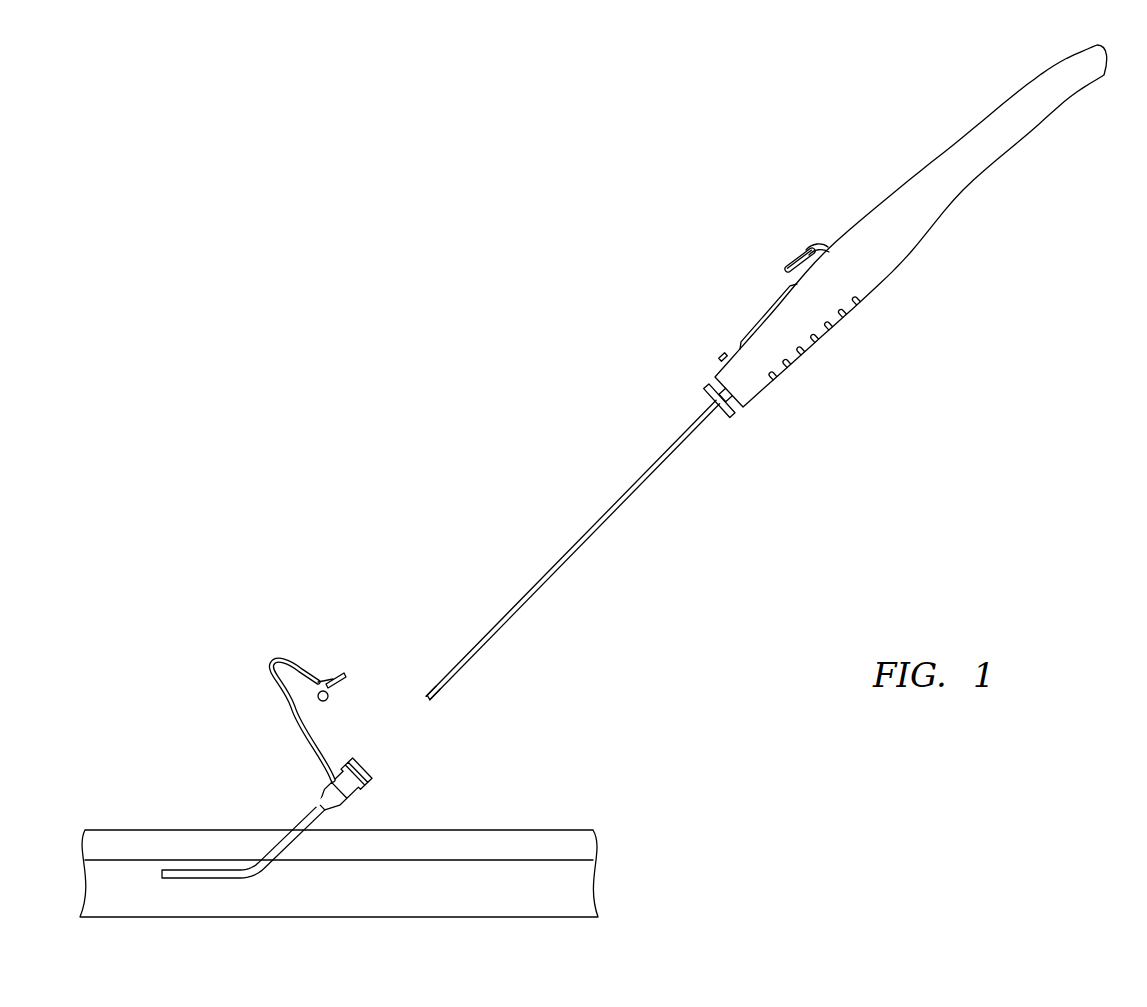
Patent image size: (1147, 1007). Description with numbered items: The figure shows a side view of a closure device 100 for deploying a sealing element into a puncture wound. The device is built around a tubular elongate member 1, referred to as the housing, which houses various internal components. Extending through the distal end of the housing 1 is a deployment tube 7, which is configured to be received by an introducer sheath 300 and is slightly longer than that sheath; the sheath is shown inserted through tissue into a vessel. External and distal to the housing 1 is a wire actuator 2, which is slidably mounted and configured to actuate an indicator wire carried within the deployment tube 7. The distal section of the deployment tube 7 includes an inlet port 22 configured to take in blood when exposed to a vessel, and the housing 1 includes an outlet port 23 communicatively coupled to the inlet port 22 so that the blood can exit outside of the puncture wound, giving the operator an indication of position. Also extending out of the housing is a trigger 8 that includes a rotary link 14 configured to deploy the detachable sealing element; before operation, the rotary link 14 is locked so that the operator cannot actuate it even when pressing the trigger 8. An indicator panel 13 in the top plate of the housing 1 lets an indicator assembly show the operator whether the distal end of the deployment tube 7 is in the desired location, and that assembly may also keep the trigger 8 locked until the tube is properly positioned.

The closure device 100 is at (513, 340).
The tubular elongate member 1 is at (917, 261).
The wire actuator 2 is at (737, 413).
The deployment tube 7 is at (570, 547).
The trigger 8 is at (789, 264).
The indicator panel 13 is at (758, 320).
The rotary link 14 is at (787, 273).
The inlet port 22 is at (457, 672).
The outlet port 23 is at (725, 352).
The introducer sheath 300 is at (286, 801).